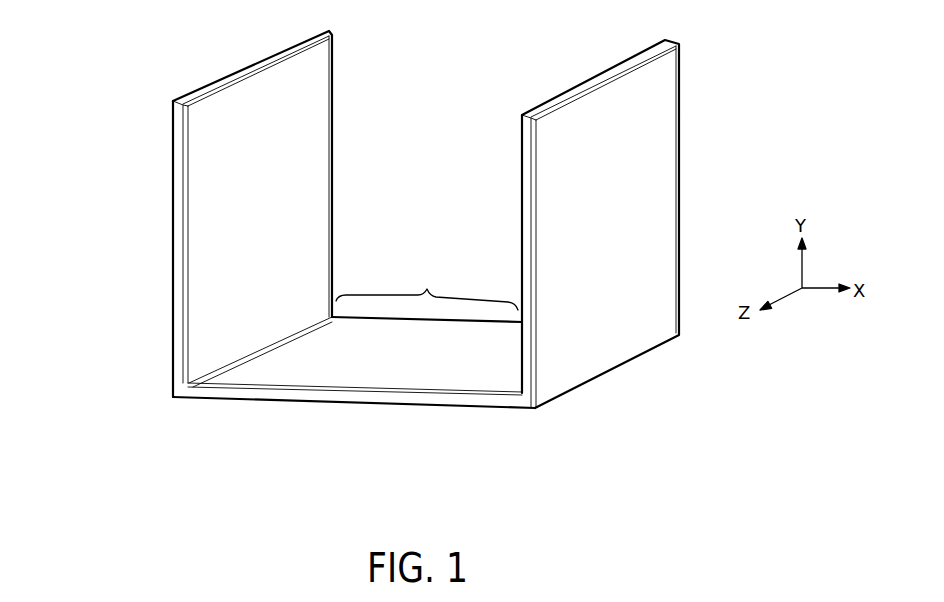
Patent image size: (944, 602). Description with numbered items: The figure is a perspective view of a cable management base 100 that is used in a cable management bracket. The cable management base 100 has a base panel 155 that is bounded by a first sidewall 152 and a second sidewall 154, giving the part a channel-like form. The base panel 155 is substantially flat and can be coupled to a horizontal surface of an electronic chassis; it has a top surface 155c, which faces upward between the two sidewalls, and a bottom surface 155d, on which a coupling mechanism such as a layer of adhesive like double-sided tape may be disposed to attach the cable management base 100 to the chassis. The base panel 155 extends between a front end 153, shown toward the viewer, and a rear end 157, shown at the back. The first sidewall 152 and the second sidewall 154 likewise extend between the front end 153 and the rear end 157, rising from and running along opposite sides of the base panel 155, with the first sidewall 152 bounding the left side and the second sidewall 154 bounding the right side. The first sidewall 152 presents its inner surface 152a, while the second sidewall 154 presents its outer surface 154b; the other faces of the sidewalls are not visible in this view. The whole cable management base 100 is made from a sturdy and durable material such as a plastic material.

The cable management base 100 is at (358, 258).
The first sidewall 152 is at (287, 214).
The inner surface 152a is at (290, 199).
The front end 153 is at (426, 258).
The second sidewall 154 is at (571, 224).
The outer surface 154b is at (512, 178).
The base panel 155 is at (409, 313).
The top surface 155c is at (430, 354).
The bottom surface 155d is at (521, 407).
The rear end 157 is at (385, 281).